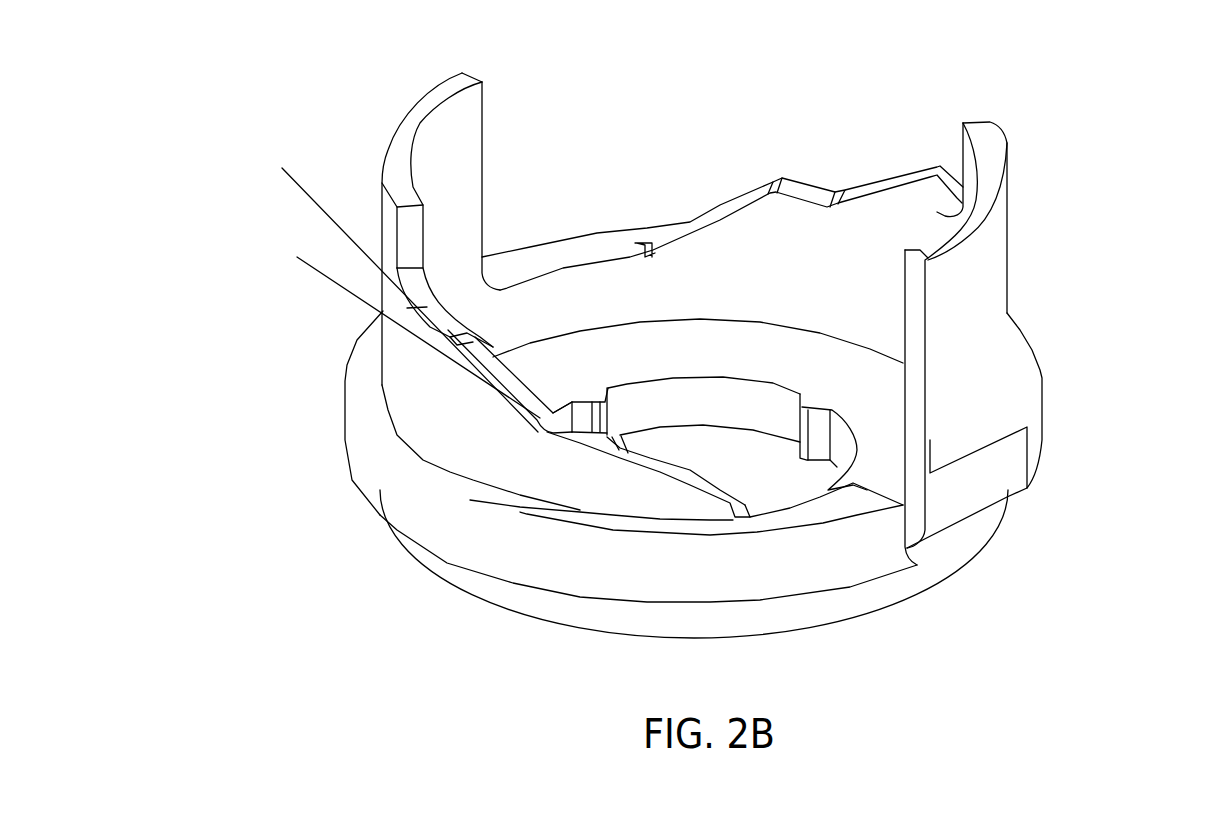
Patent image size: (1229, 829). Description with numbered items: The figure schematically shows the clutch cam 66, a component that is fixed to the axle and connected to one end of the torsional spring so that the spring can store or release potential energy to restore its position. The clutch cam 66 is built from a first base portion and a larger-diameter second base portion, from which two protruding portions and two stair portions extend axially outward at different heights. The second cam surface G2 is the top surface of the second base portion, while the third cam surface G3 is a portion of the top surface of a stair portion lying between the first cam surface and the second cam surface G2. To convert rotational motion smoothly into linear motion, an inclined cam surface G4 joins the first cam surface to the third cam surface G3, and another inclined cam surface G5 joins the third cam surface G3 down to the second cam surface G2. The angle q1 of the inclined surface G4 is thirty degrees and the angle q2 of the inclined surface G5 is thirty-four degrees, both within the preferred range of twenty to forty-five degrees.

The clutch cam 66 is at (1083, 133).
The second cam surface G2 is at (810, 512).
The third cam surface G3 is at (580, 438).
The inclined cam surface G4 is at (503, 390).
The inclined cam surface G5 is at (672, 483).
The angle of the inclined surface G4 q1 is at (293, 268).
The angle of the inclined surface G5 q2 is at (607, 515).